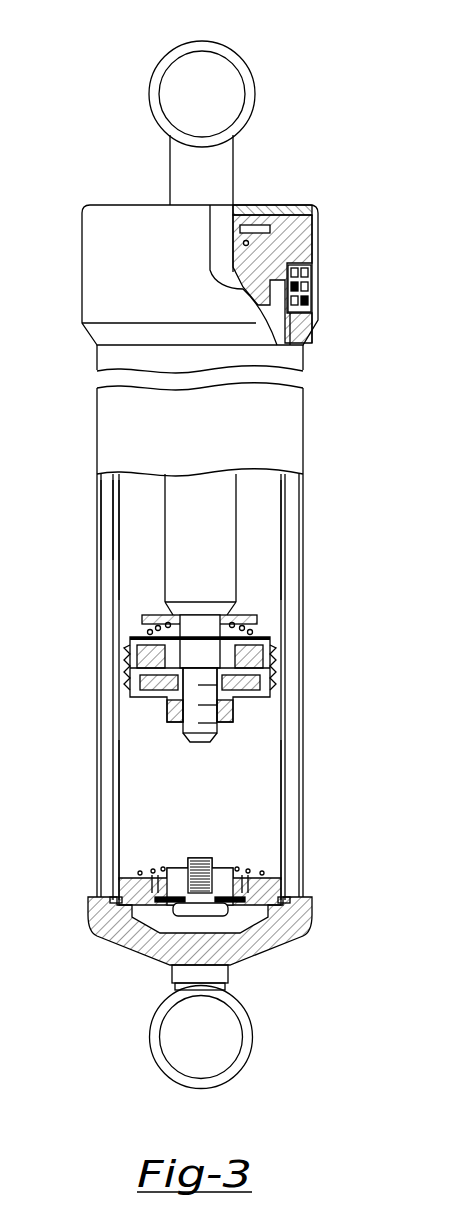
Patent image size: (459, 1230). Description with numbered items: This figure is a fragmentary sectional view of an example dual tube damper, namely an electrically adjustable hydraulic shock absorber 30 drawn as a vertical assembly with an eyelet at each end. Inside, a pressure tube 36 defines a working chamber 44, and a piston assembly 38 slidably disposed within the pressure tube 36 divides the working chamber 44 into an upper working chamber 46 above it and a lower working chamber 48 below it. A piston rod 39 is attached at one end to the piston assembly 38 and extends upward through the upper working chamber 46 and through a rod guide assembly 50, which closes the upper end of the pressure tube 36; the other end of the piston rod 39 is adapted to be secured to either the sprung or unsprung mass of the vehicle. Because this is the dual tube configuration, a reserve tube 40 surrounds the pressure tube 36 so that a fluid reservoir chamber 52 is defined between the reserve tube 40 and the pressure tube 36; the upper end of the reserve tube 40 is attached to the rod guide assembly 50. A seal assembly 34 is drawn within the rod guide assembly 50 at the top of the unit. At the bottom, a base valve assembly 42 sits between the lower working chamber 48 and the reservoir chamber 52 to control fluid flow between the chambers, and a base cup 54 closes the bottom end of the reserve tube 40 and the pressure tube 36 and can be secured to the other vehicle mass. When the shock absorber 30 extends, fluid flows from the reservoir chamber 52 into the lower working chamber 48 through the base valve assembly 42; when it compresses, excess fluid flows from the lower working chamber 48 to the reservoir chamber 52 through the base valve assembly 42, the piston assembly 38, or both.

The electrically adjustable hydraulic shock absorber 30 is at (208, 552).
The rod guide assembly 50 is at (247, 267).
The seal assembly 34 is at (322, 270).
The reserve tube 40 is at (302, 745).
The pressure tube 36 is at (284, 528).
The fluid reservoir chamber 52 is at (110, 543).
The piston rod 39 is at (186, 538).
The upper working chamber 46 is at (250, 588).
The piston assembly 38 is at (262, 652).
The lower working chamber 48 is at (147, 763).
The working chamber 44 is at (247, 854).
The base valve assembly 42 is at (270, 878).
The base cup 54 is at (120, 920).